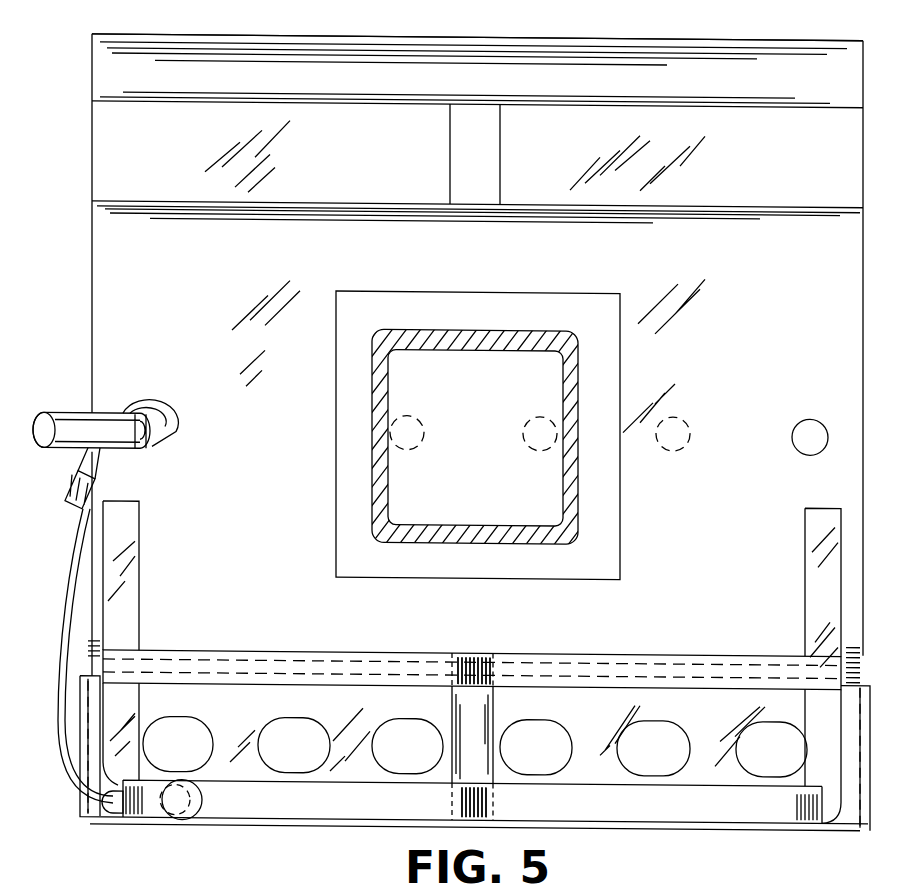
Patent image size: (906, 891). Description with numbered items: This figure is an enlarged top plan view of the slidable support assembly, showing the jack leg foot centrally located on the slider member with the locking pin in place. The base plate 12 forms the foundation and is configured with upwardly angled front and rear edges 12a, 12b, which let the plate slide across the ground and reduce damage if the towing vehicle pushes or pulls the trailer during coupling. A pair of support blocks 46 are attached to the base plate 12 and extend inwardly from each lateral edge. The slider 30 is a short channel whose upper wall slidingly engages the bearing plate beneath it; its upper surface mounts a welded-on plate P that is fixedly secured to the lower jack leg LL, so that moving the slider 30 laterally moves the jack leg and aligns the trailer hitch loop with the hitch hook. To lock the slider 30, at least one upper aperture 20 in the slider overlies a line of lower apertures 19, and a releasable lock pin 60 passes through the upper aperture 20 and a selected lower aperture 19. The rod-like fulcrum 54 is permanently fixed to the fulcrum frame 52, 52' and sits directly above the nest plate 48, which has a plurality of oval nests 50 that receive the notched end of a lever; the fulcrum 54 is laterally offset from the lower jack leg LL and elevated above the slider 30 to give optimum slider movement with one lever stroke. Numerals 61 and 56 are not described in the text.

The base plate 12 is at (85, 164).
The front edge 12a is at (312, 32).
The rear edge 12b is at (290, 828).
The support blocks 46 is at (501, 154).
The plate P is at (386, 296).
The lower jack leg LL is at (578, 345).
The apertures 19 is at (676, 450).
The upper aperture 20 is at (792, 444).
The releasable lock pin 60 is at (70, 411).
The cable 61 is at (62, 553).
The slider 30 is at (270, 538).
The post 56 is at (136, 612).
The fulcrum frame 52 is at (474, 651).
The fulcrum 54 is at (494, 712).
The nest plate 48 is at (242, 722).
The fulcrum frame 52' is at (472, 823).
The nests 50 is at (780, 772).